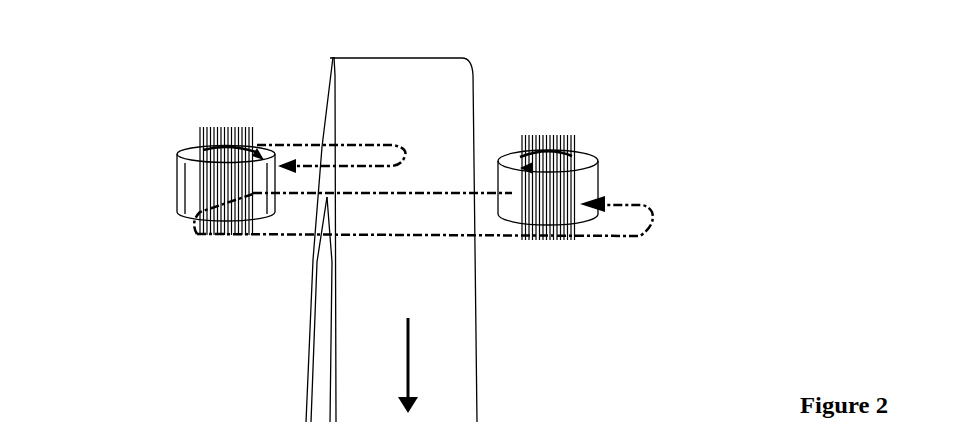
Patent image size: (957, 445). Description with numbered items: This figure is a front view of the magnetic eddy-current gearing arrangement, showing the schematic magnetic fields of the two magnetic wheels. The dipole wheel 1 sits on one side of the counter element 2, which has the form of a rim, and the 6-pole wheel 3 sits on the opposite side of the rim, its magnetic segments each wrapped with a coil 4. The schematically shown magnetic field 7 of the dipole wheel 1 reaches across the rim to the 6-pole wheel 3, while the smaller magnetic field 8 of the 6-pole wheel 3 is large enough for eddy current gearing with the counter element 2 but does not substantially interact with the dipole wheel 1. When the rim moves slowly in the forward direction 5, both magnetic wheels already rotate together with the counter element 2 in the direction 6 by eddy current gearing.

The dipole wheel 1 is at (598, 193).
The counter element 2 is at (330, 68).
The 6-pole wheel 3 is at (182, 185).
The coil 4 is at (210, 130).
The forward direction 5 is at (438, 367).
The direction of rotation 6 is at (258, 150).
The magnetic field 7 is at (498, 238).
The magnetic field 8 is at (360, 143).